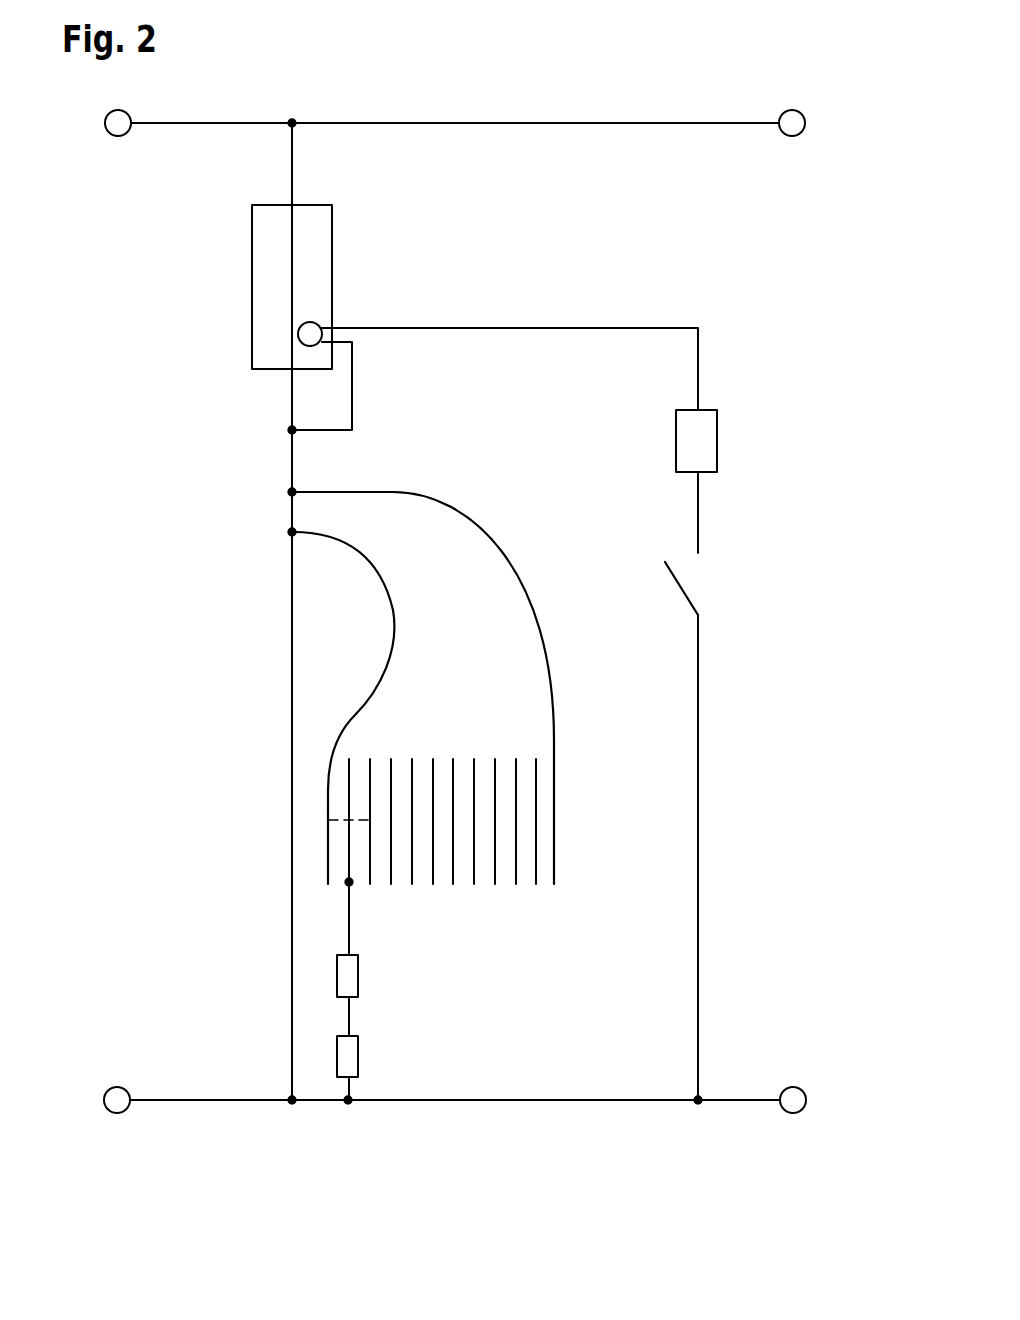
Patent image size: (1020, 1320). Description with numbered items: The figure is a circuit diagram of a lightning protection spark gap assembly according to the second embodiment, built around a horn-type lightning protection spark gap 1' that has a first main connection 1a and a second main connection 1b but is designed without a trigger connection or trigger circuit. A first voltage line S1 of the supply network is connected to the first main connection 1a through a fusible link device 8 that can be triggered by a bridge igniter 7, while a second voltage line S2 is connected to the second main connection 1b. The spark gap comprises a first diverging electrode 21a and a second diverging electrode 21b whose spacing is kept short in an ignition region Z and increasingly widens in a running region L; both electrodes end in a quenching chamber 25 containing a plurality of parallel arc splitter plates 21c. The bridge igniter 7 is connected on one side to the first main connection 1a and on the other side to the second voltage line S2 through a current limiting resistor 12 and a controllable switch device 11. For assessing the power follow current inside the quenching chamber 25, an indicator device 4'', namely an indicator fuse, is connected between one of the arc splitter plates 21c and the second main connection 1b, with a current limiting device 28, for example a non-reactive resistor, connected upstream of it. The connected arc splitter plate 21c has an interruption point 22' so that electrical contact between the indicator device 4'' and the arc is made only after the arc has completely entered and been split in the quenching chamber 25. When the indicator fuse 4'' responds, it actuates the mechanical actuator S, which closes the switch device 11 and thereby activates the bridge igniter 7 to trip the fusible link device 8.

The lightning protection spark gap 1' is at (197, 611).
The first main connection 1a is at (290, 492).
The second main connection 1b is at (290, 532).
The indicator device 4'' is at (392, 1061).
The bridge igniter 7 is at (298, 334).
The fusible link device 8 is at (252, 280).
The controllable switch device 11 is at (708, 571).
The current limiting resistor 12 is at (717, 442).
The first diverging electrode 21a is at (398, 492).
The second diverging electrode 21b is at (377, 567).
The arc splitter plates 21c is at (349, 849).
The interruption point 22' is at (291, 807).
The quenching chamber 25 is at (582, 832).
The current limiting device 28 is at (358, 977).
The mechanical actuator S is at (660, 586).
The first voltage line S1 is at (588, 122).
The second voltage line S2 is at (492, 1101).
The ignition region Z is at (330, 514).
The running region L is at (460, 722).